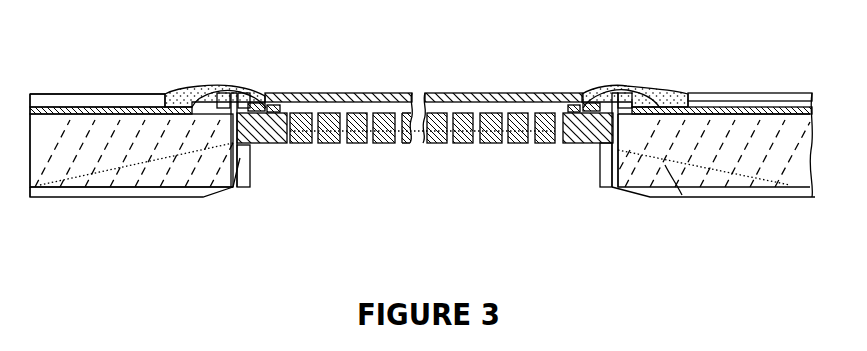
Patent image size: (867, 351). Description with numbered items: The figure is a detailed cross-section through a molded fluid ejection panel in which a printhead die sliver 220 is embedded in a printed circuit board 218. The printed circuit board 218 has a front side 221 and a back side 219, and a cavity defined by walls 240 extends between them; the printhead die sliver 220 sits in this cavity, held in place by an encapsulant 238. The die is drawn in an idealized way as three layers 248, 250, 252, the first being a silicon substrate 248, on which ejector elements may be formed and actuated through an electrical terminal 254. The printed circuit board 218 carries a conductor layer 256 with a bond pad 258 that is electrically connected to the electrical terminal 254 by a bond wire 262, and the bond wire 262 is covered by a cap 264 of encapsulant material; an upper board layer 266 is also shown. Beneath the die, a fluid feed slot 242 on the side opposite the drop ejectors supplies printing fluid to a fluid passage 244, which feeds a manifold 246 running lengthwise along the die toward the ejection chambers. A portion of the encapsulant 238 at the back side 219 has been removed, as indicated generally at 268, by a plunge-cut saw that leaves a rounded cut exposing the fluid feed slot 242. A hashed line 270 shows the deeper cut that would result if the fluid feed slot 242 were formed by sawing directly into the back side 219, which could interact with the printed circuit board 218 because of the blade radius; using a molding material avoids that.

The printed circuit board 218 is at (195, 180).
The back side 219 is at (107, 186).
The printhead die sliver 220 is at (328, 152).
The front side 221 is at (35, 95).
The encapsulant 238 is at (138, 193).
The cavity walls 240 is at (237, 188).
The fluid feed slot 242 is at (432, 185).
The fluid passage 244 is at (477, 143).
The manifold 246 is at (523, 110).
The silicon substrate 248 is at (290, 115).
The second die layer 250 is at (270, 103).
The third die layer 252 is at (350, 93).
The electrical terminal 254 is at (590, 103).
The conductor layer 256 is at (133, 112).
The bond pad 258 is at (676, 106).
The bond wire 262 is at (660, 106).
The cap 264 is at (190, 88).
The top layer 266 is at (85, 104).
The removed portion of encapsulant 268 is at (640, 195).
The hashed line 270 is at (668, 150).